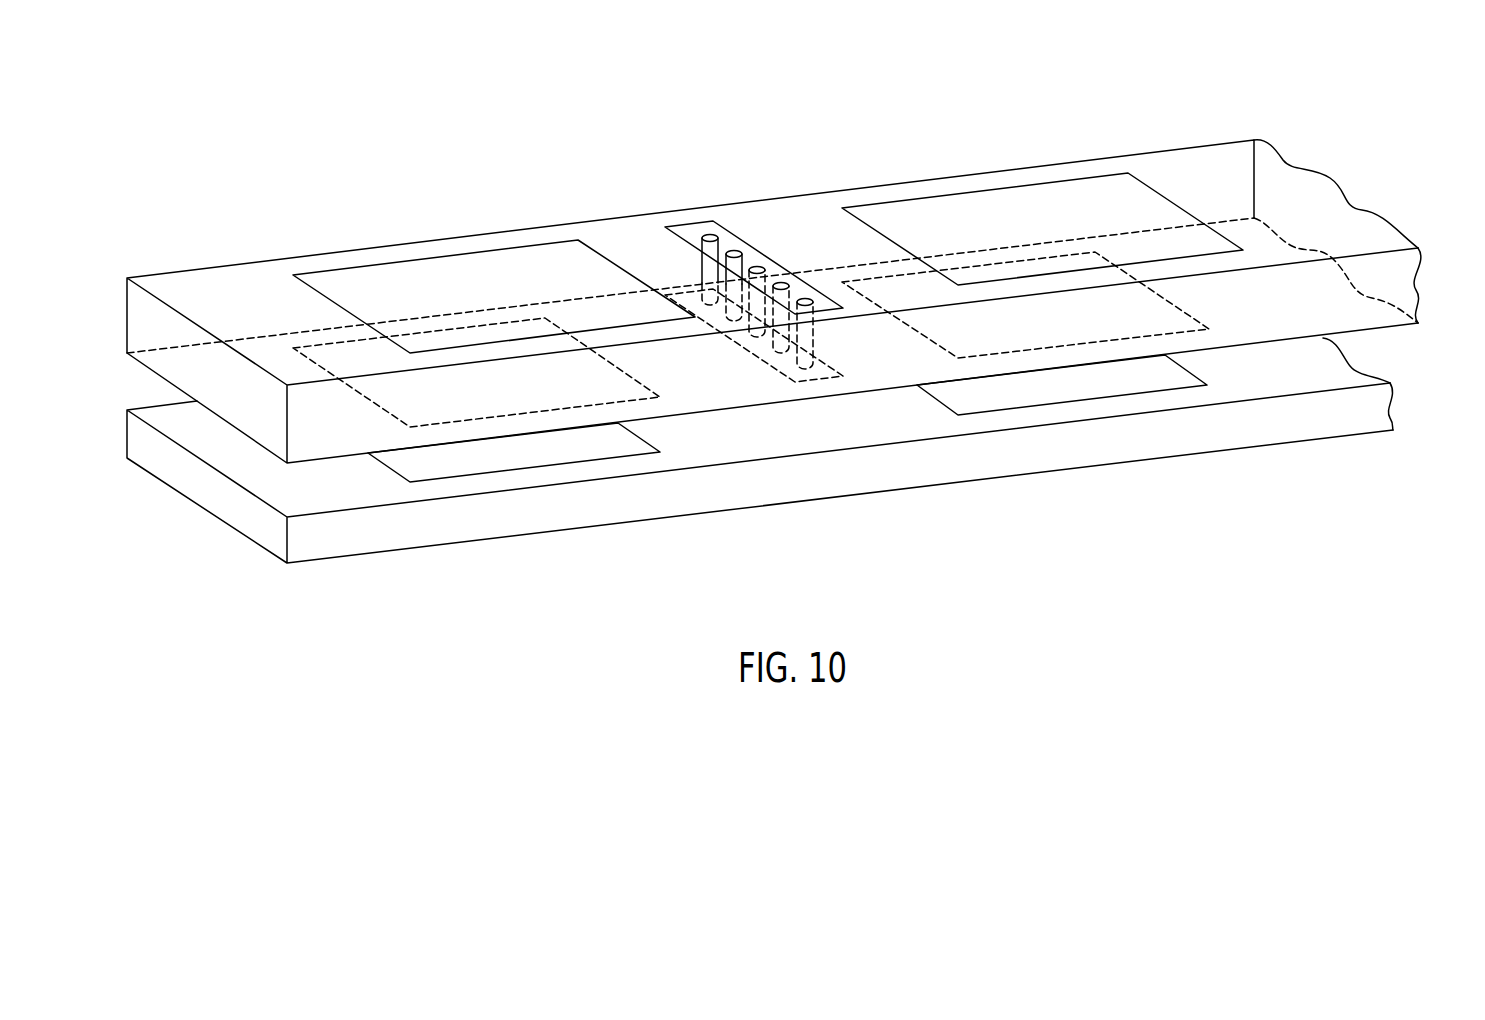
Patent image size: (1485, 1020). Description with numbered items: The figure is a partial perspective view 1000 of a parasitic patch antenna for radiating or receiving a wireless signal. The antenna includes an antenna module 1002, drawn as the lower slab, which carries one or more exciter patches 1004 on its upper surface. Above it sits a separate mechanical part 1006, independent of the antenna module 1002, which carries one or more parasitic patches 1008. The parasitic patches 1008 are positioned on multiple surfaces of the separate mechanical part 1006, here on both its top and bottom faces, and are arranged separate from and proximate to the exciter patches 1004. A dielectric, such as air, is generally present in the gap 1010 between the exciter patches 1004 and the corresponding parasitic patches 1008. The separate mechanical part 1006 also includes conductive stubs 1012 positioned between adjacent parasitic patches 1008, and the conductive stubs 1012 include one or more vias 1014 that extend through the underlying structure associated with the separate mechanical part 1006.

The partial perspective view 1000 is at (186, 91).
The antenna module 1002 is at (1285, 427).
The exciter patches 1004 is at (525, 452).
The separate mechanical part 1006 is at (1323, 210).
The parasitic patches 1008 is at (440, 270).
The gap 1010 is at (1385, 350).
The conductive stubs 1012 is at (697, 228).
The vias 1014 is at (712, 232).